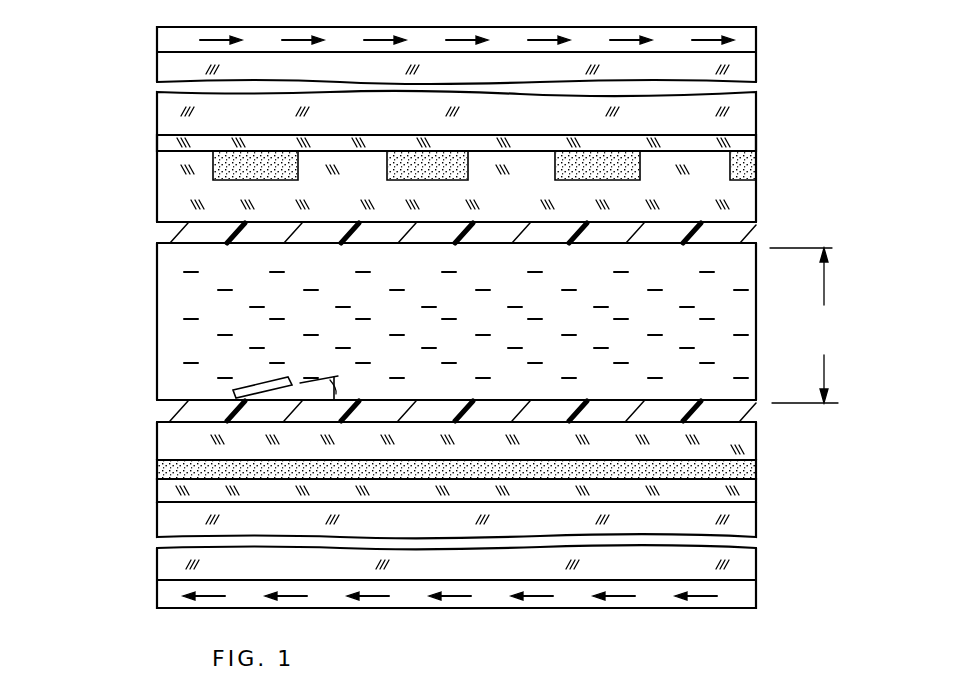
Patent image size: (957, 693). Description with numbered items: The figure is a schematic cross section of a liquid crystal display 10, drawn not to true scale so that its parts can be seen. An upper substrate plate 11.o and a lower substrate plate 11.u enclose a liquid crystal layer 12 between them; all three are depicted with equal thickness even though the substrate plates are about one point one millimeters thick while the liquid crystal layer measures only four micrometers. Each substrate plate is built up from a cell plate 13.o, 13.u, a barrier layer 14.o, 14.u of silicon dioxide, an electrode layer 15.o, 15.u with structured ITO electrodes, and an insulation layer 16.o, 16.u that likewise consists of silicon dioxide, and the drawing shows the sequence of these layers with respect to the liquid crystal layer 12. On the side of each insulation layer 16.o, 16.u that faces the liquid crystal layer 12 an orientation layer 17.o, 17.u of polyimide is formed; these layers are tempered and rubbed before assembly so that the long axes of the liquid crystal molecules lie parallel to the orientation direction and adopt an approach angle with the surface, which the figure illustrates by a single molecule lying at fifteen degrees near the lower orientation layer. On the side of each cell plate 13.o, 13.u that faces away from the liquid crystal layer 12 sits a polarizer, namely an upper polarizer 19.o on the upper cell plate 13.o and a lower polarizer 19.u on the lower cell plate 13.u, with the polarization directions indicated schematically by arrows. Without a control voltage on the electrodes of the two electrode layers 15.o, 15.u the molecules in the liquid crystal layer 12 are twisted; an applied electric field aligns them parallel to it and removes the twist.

The liquid crystal display 10 is at (795, 30).
The upper substrate plate 11.o is at (765, 223).
The lower substrate plate 11.u is at (768, 582).
The liquid crystal layer 12 is at (188, 293).
The upper cell plate 13.o is at (170, 68).
The lower cell plate 13.u is at (170, 522).
The upper barrier layer 14.o is at (168, 145).
The lower barrier layer 14.u is at (168, 491).
The upper electrode layer 15.o is at (213, 172).
The lower electrode layer 15.u is at (172, 469).
The upper insulation layer 16.o is at (173, 208).
The lower insulation layer 16.u is at (172, 437).
The upper orientation layer 17.o is at (172, 232).
The lower orientation layer 17.u is at (165, 408).
The upper polarizer 19.o is at (170, 42).
The lower polarizer 19.u is at (170, 592).